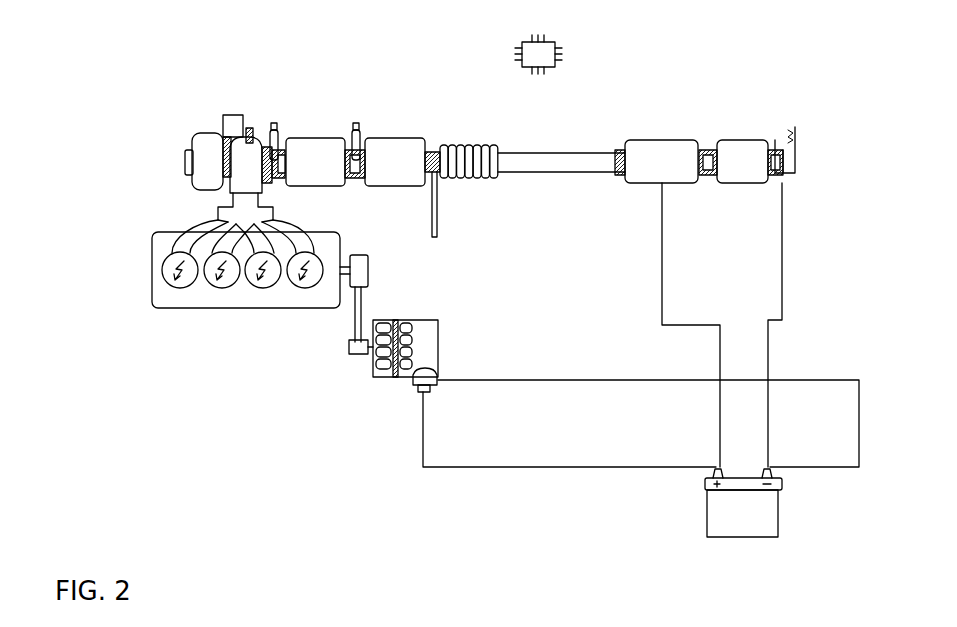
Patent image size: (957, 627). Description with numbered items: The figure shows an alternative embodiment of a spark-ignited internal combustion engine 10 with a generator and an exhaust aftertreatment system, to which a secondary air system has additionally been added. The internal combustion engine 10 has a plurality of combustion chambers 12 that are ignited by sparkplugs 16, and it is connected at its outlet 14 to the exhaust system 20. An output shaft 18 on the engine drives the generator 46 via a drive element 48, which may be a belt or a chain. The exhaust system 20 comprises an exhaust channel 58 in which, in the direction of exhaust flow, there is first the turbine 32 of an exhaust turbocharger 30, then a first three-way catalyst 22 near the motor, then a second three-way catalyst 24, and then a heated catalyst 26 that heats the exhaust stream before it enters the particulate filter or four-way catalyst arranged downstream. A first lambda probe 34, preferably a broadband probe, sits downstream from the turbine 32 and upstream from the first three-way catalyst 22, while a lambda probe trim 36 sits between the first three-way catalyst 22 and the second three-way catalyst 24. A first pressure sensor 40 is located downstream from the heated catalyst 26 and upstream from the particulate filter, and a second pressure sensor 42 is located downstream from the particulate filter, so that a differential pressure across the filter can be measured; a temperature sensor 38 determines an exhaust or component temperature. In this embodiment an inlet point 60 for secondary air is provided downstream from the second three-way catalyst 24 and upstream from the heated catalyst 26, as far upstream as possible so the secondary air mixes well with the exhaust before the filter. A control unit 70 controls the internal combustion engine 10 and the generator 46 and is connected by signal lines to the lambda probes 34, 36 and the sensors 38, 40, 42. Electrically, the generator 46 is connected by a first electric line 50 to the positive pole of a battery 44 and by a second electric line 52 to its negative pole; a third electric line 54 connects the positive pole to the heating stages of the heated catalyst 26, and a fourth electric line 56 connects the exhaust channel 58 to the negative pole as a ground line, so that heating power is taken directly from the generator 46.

The internal combustion engine 10 is at (152, 234).
The combustion chambers 12 is at (297, 288).
The outlet 14 is at (257, 225).
The sparkplugs 16 is at (180, 262).
The output shaft 18 is at (368, 270).
The exhaust system 20 is at (617, 113).
The first three-way catalyst 22 is at (316, 140).
The second three-way catalyst 24 is at (398, 140).
The heated catalyst 26 is at (663, 141).
The exhaust turbocharger 30 is at (224, 108).
The turbine 32 is at (250, 126).
The first lambda probe 34 is at (275, 118).
The lambda probe trim 36 is at (356, 118).
The temperature sensor 38 is at (796, 134).
The first pressure sensor 40 is at (708, 145).
The second pressure sensor 42 is at (779, 145).
The battery 44 is at (778, 512).
The generator 46 is at (392, 377).
The drive element 48 is at (355, 320).
The first electric line 50 is at (557, 467).
The second electric line 52 is at (822, 380).
The third electric line 54 is at (662, 312).
The fourth electric line 56 is at (783, 267).
The exhaust channel 58 is at (557, 173).
The inlet point 60 is at (437, 204).
The control unit 70 is at (556, 68).